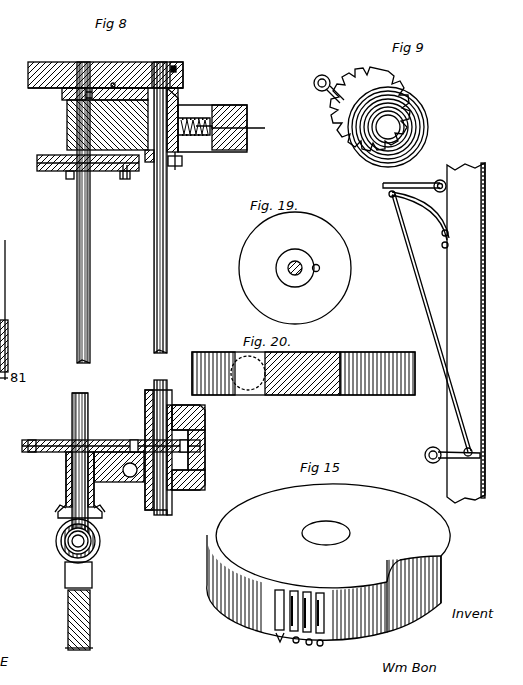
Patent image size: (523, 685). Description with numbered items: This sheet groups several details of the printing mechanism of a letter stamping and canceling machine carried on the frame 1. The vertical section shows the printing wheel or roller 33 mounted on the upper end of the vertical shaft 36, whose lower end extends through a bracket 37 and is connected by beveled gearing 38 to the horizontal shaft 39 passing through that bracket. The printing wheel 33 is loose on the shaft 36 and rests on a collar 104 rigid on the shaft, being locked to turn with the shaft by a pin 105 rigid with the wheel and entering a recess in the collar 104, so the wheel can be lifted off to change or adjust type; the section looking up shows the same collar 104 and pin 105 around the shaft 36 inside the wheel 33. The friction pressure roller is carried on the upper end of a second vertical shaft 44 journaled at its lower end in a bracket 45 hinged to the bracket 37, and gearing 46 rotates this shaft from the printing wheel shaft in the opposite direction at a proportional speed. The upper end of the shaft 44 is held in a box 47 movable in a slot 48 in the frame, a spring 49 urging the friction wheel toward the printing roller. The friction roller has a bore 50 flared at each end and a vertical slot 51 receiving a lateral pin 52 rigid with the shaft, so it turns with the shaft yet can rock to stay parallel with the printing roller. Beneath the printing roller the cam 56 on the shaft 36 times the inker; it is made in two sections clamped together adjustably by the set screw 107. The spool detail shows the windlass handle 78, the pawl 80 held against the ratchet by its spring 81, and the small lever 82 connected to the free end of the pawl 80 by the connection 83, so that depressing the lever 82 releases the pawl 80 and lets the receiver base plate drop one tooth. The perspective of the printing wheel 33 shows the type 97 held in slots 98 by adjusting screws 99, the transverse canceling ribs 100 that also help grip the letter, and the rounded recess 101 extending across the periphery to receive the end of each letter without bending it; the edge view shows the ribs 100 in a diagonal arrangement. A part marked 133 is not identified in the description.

In FIG. 8, the frame 1 is at (90, 604).
In FIG. 9, the frame 1 is at (466, 333).
In FIG. 8, the printing wheel 33 is at (93, 75).
In FIG. 19, the printing wheel 33 is at (295, 268).
In FIG. 15, the printing wheel 33 is at (328, 562).
In FIG. 8, the vertical shaft 36 is at (90, 240).
In FIG. 19, the vertical shaft 36 is at (289, 270).
In FIG. 8, the bracket 37 is at (66, 480).
In FIG. 8, the beveled gearing 38 is at (58, 522).
In FIG. 8, the horizontal shaft 39 is at (84, 540).
In FIG. 8, the vertical shaft 44 is at (167, 272).
In FIG. 8, the bracket 45 is at (206, 434).
In FIG. 8, the gearing 46 is at (128, 444).
In FIG. 8, the box 47 is at (180, 100).
In FIG. 8, the slot 48 is at (198, 145).
In FIG. 8, the spring 49 is at (232, 127).
In FIG. 8, the bore 50 is at (155, 66).
In FIG. 8, the vertical slot 51 is at (176, 66).
In FIG. 8, the lateral pin 52 is at (183, 78).
In FIG. 8, the cam 56 is at (76, 167).
In FIG. 9, the handle 78 is at (337, 80).
In FIG. 9, the pawl 80 is at (430, 184).
In FIG. 9, the spring 81 is at (430, 208).
In FIG. 9, the small lever 82 is at (462, 460).
In FIG. 9, the connection 83 is at (430, 332).
In FIG. 15, the type 97 is at (306, 586).
In FIG. 15, the slots 98 is at (272, 600).
In FIG. 15, the adjusting screw 99 is at (295, 650).
In FIG. 20, the transverse ribs 100 is at (303, 384).
In FIG. 15, the transverse ribs 100 is at (326, 594).
In FIG. 20, the recess 101 is at (377, 384).
In FIG. 15, the recess 101 is at (419, 600).
In FIG. 8, the collar 104 is at (66, 96).
In FIG. 19, the collar 104 is at (287, 287).
In FIG. 8, the pin 105 is at (113, 82).
In FIG. 19, the pin 105 is at (318, 265).
In FIG. 8, the clamping screw 107 is at (140, 172).
In FIG. 20, the bore 133 is at (220, 394).